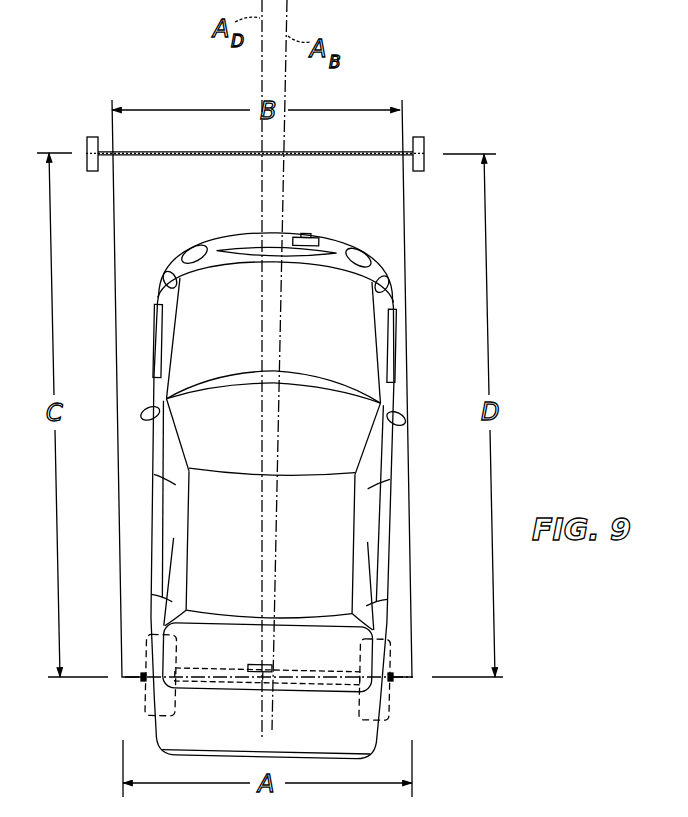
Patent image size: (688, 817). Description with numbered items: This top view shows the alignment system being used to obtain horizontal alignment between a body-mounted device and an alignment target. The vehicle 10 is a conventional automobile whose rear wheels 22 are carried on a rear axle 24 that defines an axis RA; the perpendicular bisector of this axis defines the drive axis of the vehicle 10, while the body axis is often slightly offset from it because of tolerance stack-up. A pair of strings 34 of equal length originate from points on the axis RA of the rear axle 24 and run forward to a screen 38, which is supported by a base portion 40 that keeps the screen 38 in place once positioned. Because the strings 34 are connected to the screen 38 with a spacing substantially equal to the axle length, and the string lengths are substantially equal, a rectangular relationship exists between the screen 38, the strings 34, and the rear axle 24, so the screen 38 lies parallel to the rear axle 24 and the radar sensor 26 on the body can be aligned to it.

The vehicle 10 is at (294, 474).
The wheels 22 is at (289, 682).
The rear axle 24 is at (267, 657).
The radar sensor 26 is at (328, 219).
The strings 34 is at (113, 335).
The screen 38 is at (180, 157).
The base portion 40 is at (89, 143).
The axis of the rear axle RA is at (296, 690).